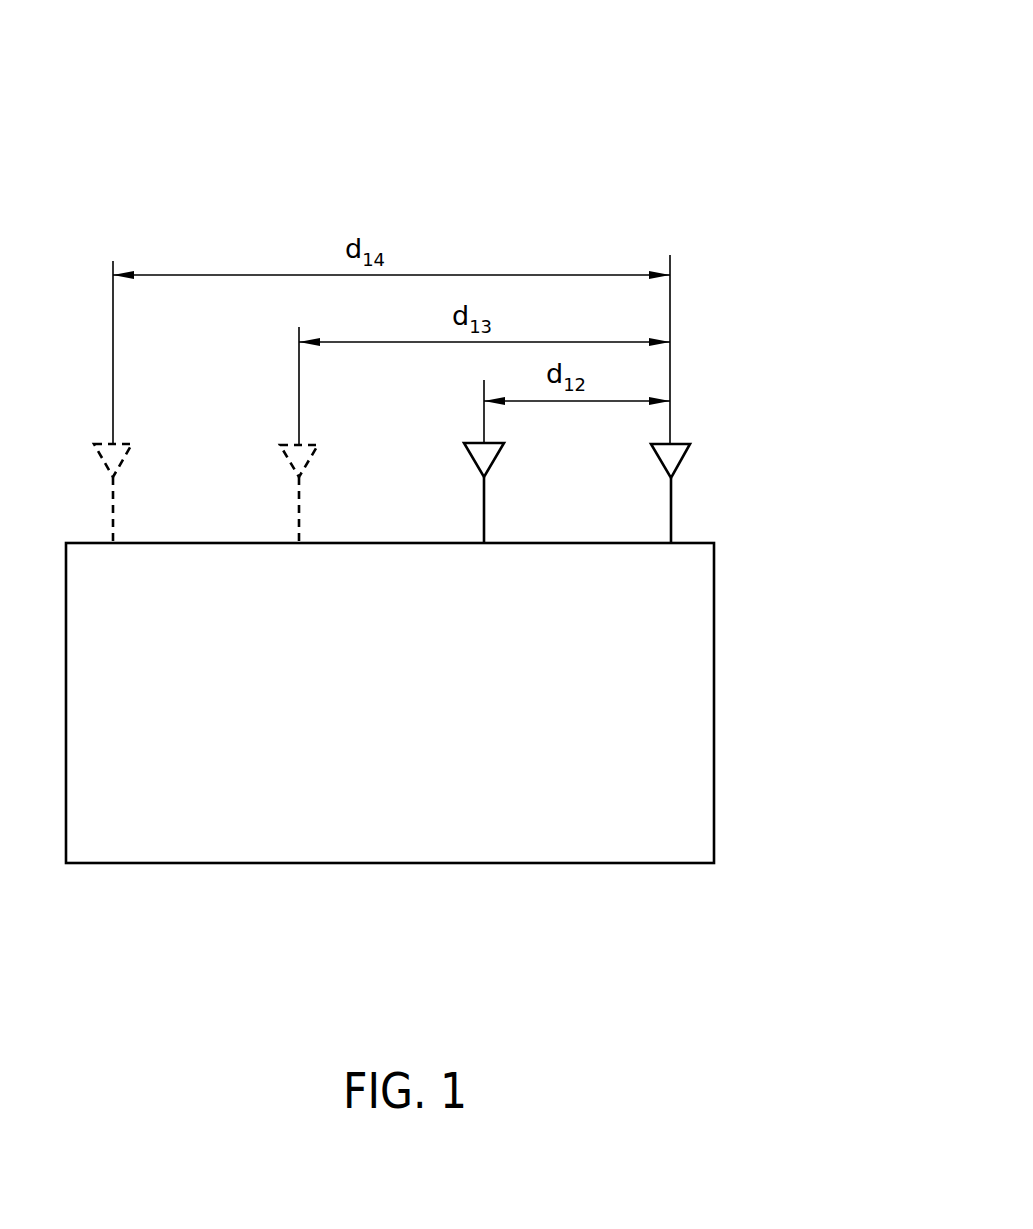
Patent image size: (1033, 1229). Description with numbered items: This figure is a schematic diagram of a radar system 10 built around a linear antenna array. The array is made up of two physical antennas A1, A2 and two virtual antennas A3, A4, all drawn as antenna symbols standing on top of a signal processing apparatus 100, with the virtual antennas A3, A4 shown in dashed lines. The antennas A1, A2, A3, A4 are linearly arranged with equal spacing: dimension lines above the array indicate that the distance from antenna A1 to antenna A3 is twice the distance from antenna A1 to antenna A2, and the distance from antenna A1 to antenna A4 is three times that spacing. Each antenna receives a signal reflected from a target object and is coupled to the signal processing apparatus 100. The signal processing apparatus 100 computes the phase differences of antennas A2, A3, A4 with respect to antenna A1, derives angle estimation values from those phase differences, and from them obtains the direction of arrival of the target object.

The radar system 10 is at (684, 56).
The signal processing apparatus 100 is at (716, 597).
The antenna A1 is at (671, 525).
The antenna A2 is at (484, 525).
The antenna A3 is at (299, 525).
The antenna A4 is at (113, 525).